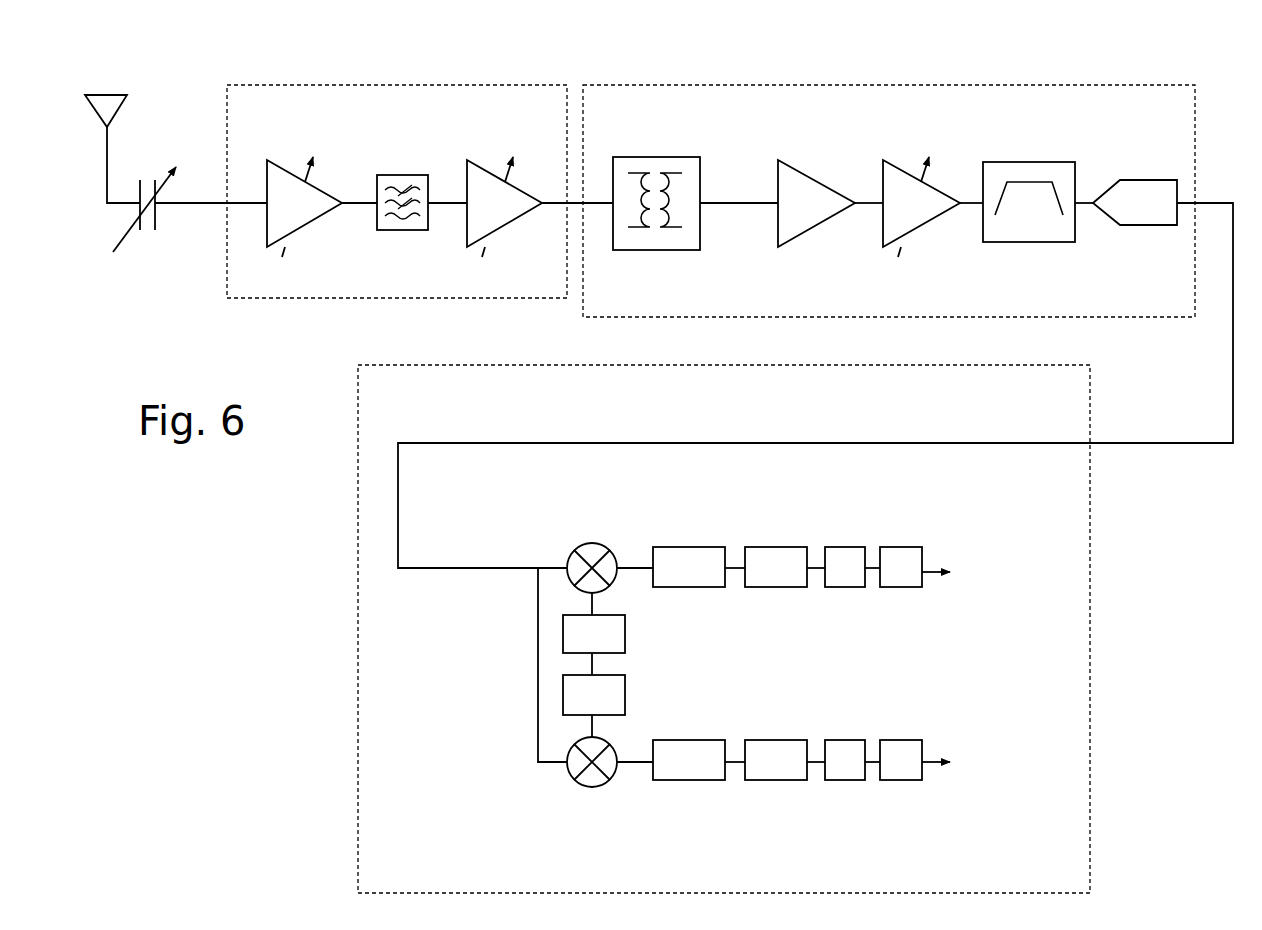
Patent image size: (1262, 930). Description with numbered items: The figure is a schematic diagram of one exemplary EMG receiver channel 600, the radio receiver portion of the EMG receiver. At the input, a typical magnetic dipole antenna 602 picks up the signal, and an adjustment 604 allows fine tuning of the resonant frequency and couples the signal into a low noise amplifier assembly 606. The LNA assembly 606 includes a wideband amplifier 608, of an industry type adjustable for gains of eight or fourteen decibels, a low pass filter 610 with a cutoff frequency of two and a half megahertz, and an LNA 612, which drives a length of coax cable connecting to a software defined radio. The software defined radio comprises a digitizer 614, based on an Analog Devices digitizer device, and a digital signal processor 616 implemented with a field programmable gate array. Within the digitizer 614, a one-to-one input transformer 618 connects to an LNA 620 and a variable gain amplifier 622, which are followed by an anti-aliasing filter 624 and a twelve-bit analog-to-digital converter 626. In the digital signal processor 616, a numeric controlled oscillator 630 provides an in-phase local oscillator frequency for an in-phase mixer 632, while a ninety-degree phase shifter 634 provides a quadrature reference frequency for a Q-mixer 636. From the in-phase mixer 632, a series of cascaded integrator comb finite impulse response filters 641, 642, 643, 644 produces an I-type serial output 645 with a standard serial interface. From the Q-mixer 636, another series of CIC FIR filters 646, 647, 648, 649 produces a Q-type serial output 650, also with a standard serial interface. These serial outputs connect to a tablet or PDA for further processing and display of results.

The EMG receiver channel 600 is at (236, 523).
The magnetic dipole antenna 602 is at (116, 117).
The adjustment 604 is at (155, 212).
The low noise amplifier assembly 606 is at (371, 83).
The wideband amplifier 608 is at (310, 223).
The low pass filter 610 is at (428, 175).
The LNA 612 is at (515, 223).
The digitizer 614 is at (770, 82).
The digital signal processor 616 is at (456, 405).
The 1:1 input transformer 618 is at (667, 252).
The LNA 620 is at (820, 227).
The variable gain amplifier 622 is at (932, 223).
The anti-aliasing filter 624 is at (1018, 162).
The analog-to-digital converter 626 is at (1133, 228).
The numeric controlled oscillator 630 is at (626, 640).
The in-phase mixer 632 is at (566, 560).
The 90-degree phase shifter 634 is at (626, 700).
The Q-mixer 636 is at (566, 771).
The CIC FIR filter 641 is at (690, 541).
The CIC FIR filter 642 is at (783, 541).
The CIC FIR filter 643 is at (855, 541).
The CIC FIR filter 644 is at (907, 541).
The I-type serial output 645 is at (932, 560).
The CIC FIR filter 646 is at (690, 781).
The CIC FIR filter 647 is at (770, 781).
The CIC FIR filter 648 is at (840, 781).
The CIC FIR filter 649 is at (900, 781).
The Q-type serial output 650 is at (927, 757).